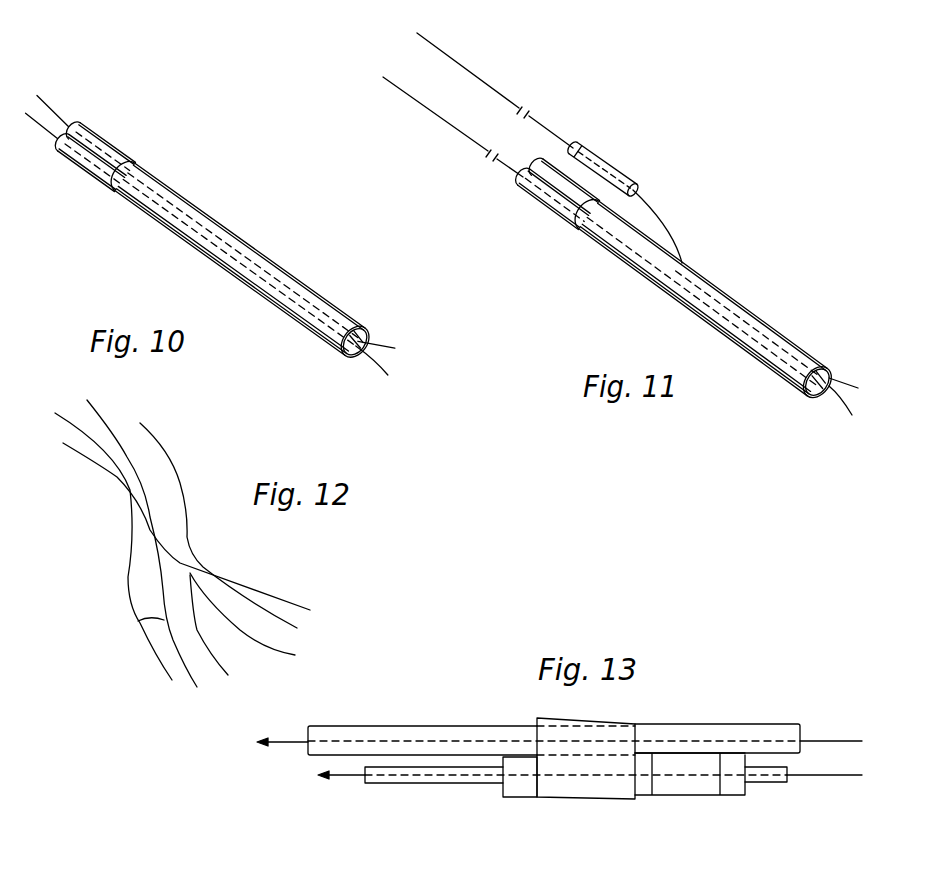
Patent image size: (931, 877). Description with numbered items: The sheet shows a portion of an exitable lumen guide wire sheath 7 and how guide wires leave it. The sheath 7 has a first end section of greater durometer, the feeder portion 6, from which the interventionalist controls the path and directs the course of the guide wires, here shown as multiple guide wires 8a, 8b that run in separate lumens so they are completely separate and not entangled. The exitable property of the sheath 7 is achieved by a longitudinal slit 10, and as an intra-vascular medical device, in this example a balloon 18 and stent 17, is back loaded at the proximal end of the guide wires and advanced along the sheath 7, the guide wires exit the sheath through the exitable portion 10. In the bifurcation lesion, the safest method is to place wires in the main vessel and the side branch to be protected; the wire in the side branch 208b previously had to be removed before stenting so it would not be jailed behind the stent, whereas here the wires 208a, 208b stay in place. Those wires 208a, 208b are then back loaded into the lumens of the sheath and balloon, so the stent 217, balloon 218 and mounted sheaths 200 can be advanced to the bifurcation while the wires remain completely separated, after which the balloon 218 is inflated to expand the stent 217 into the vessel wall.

In FIG. 10, the exitable lumen guide wire sheath 7 is at (163, 178).
In FIG. 11, the exitable lumen guide wire sheath 7 is at (783, 333).
In FIG. 10, the longitudinal slit 10 is at (107, 140).
In FIG. 11, the longitudinal slit 10 is at (737, 303).
In FIG. 10, the feeder portion 6 is at (90, 177).
In FIG. 10, the first guide wire 8a is at (50, 104).
In FIG. 10, the second guide wire 8b is at (43, 130).
In FIG. 11, the stent 17 is at (617, 173).
In FIG. 11, the balloon 18 is at (580, 147).
In FIG. 12, the main vessel wire 208a is at (140, 620).
In FIG. 12, the side branch wire 208b is at (233, 594).
In FIG. 13, the mounted sheaths 200 is at (559, 789).
In FIG. 13, the stent 217 is at (587, 800).
In FIG. 13, the balloon 218 is at (523, 797).